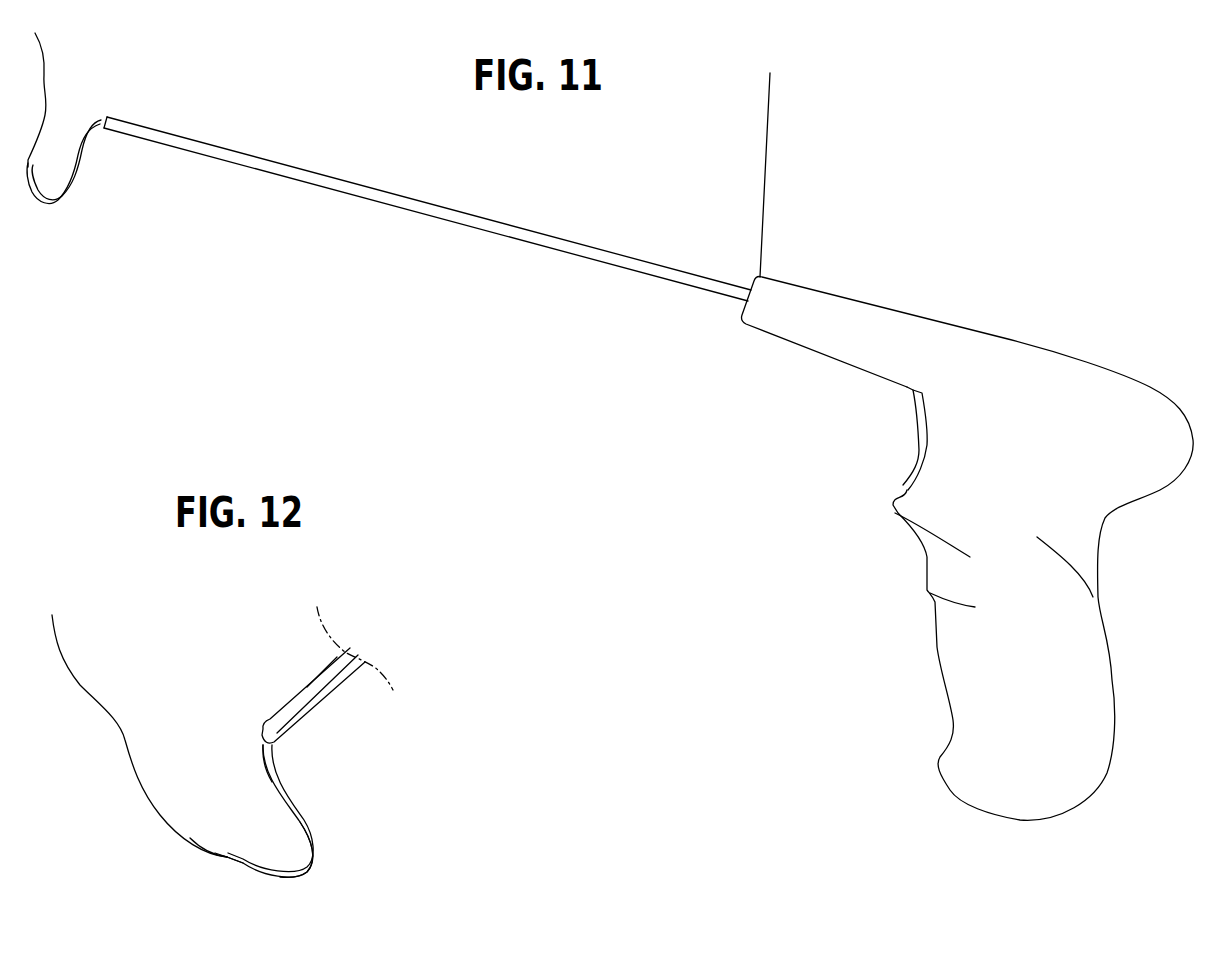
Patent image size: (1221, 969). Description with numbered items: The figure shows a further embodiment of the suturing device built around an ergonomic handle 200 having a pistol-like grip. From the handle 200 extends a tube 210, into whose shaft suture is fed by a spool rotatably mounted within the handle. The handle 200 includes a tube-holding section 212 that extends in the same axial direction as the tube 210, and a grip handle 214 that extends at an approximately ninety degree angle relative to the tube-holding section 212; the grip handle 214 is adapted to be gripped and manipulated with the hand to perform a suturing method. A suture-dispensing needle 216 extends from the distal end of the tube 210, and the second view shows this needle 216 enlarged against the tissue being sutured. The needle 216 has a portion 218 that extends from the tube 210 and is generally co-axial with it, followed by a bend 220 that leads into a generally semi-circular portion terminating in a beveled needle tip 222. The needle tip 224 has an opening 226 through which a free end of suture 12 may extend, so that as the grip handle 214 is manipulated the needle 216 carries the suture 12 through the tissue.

In FIG. 11, the suture 12 is at (45, 62).
In FIG. 12, the suture 12 is at (90, 697).
In FIG. 11, the ergonomic handle 200 is at (610, 446).
In FIG. 11, the tube 210 is at (572, 240).
In FIG. 11, the tube-holding section 212 is at (840, 307).
In FIG. 11, the grip handle 214 is at (910, 606).
In FIG. 11, the suture-dispensing needle 216 is at (59, 212).
In FIG. 12, the suture-dispensing needle 216 is at (326, 826).
In FIG. 12, the needle portion 218 is at (272, 750).
In FIG. 12, the bend 220 is at (254, 753).
In FIG. 12, the beveled needle tip 222 is at (308, 873).
In FIG. 12, the needle tip 224 is at (220, 857).
In FIG. 12, the opening 226 is at (219, 847).